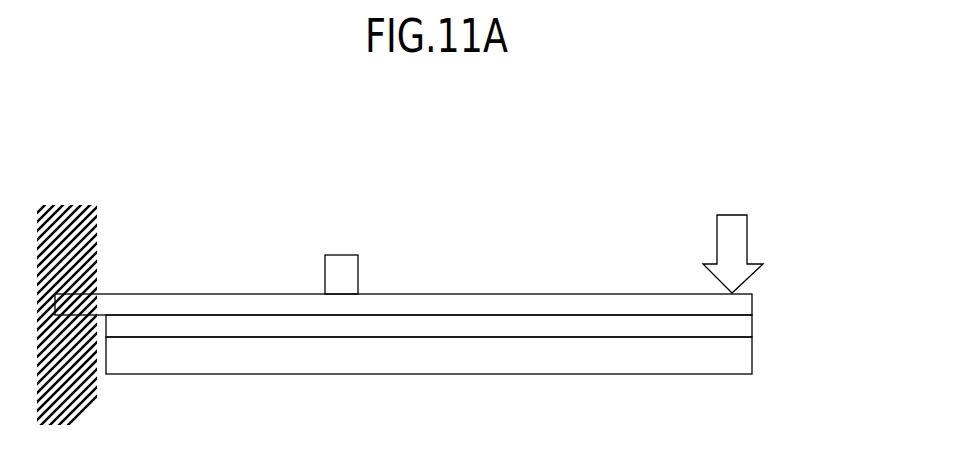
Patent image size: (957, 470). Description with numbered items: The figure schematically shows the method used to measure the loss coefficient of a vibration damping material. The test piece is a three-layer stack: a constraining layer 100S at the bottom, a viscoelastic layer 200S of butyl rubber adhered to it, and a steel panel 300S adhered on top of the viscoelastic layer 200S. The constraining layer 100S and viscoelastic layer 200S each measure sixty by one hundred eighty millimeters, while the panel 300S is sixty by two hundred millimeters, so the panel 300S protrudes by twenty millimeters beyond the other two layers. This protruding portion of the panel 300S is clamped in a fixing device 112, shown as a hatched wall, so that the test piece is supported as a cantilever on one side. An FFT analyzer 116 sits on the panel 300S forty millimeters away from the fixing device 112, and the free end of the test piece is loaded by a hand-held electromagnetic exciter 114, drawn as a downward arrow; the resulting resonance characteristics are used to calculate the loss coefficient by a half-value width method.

The fixing device 112 is at (68, 205).
The hand-held electromagnetic exciter 114 is at (732, 213).
The FFT analyzer 116 is at (335, 253).
The panel 300S is at (752, 305).
The viscoelastic layer 200S is at (752, 326).
The constraining layer 100S is at (742, 359).